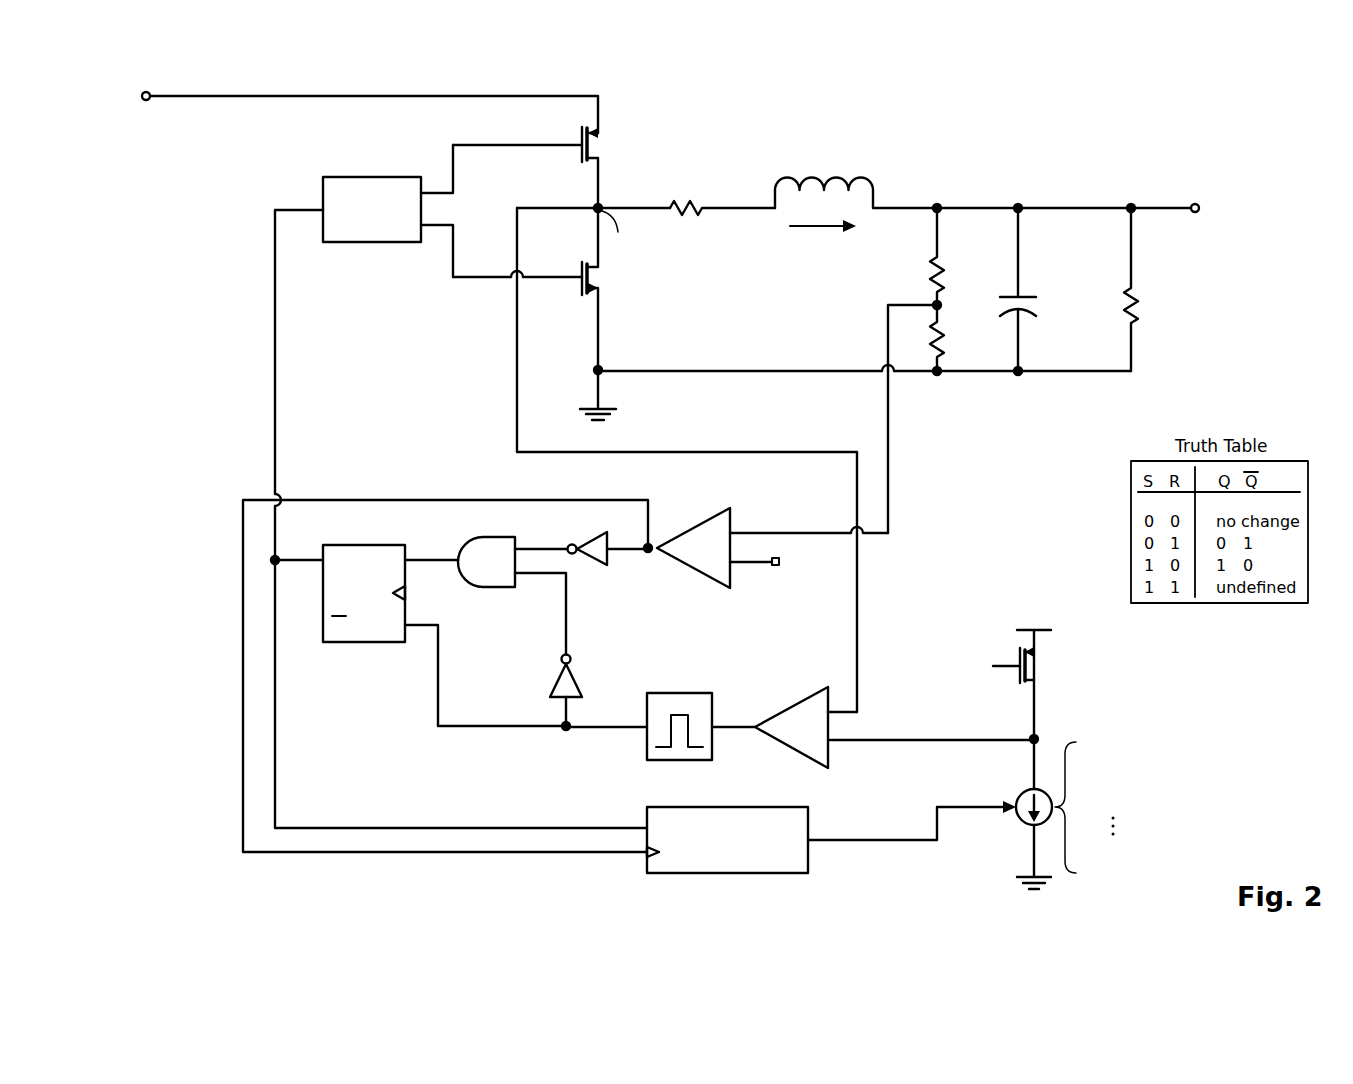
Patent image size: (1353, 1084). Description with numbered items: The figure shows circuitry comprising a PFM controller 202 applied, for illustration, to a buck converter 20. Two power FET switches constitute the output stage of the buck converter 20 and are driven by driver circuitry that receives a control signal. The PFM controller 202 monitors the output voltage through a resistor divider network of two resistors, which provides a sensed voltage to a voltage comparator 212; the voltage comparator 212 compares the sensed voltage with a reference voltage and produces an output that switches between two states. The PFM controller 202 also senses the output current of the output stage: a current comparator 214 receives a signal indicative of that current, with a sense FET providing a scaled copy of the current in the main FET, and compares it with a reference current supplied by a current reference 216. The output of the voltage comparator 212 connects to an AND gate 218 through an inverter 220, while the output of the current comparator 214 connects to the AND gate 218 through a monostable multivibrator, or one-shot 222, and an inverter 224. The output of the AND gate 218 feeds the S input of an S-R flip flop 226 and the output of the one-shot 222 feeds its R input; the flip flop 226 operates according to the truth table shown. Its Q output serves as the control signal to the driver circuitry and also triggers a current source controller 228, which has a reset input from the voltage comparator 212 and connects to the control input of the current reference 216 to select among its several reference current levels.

The buck converter 20 is at (1240, 110).
The PFM controller 202 is at (196, 500).
The voltage comparator 212 is at (717, 590).
The current comparator 214 is at (818, 686).
The current reference 216 is at (1018, 793).
The AND gate 218 is at (499, 589).
The inverter 220 is at (600, 567).
The monostable multivibrator (one-shot) 222 is at (644, 752).
The inverter 224 is at (557, 690).
The S-R flip flop 226 is at (363, 643).
The current source controller 228 is at (810, 857).